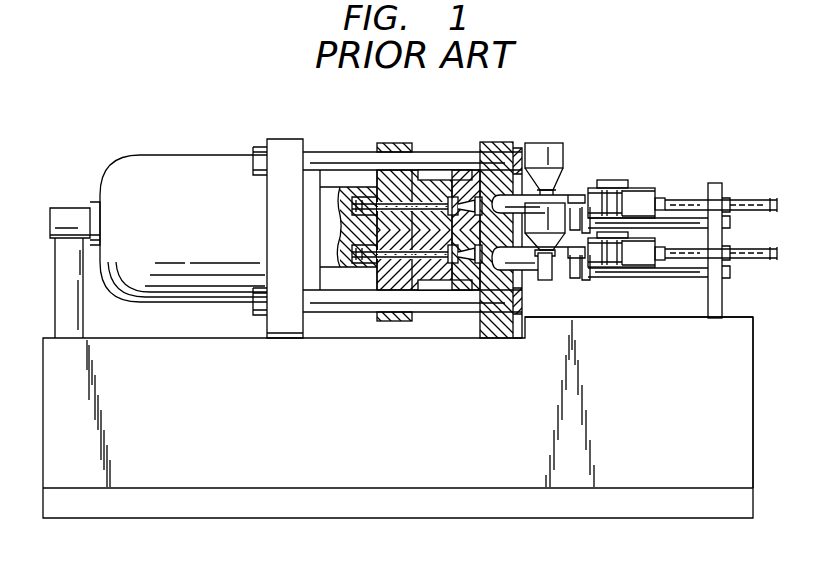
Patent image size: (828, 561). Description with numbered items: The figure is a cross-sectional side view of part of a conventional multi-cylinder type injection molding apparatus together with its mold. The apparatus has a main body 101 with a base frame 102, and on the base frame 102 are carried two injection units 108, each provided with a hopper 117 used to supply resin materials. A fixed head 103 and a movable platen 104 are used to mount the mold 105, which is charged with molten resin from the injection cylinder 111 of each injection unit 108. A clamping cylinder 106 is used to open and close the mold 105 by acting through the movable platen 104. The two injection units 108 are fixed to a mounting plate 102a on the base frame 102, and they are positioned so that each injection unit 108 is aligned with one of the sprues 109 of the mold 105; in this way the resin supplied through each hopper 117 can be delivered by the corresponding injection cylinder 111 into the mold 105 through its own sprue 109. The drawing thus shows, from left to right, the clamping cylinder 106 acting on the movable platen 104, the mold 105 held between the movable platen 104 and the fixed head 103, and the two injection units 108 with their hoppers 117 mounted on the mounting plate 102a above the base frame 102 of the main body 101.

The main body 101 is at (411, 444).
The base frame 102 is at (573, 317).
The mounting plate 102a is at (715, 183).
The fixed head 103 is at (489, 143).
The movable platen 104 is at (393, 143).
The mold 105 is at (440, 183).
The clamping cylinder 106 is at (180, 156).
The injection unit 108 is at (621, 184).
The sprue 109 is at (488, 262).
The injection cylinder 111 is at (513, 195).
The hopper 117 is at (565, 148).